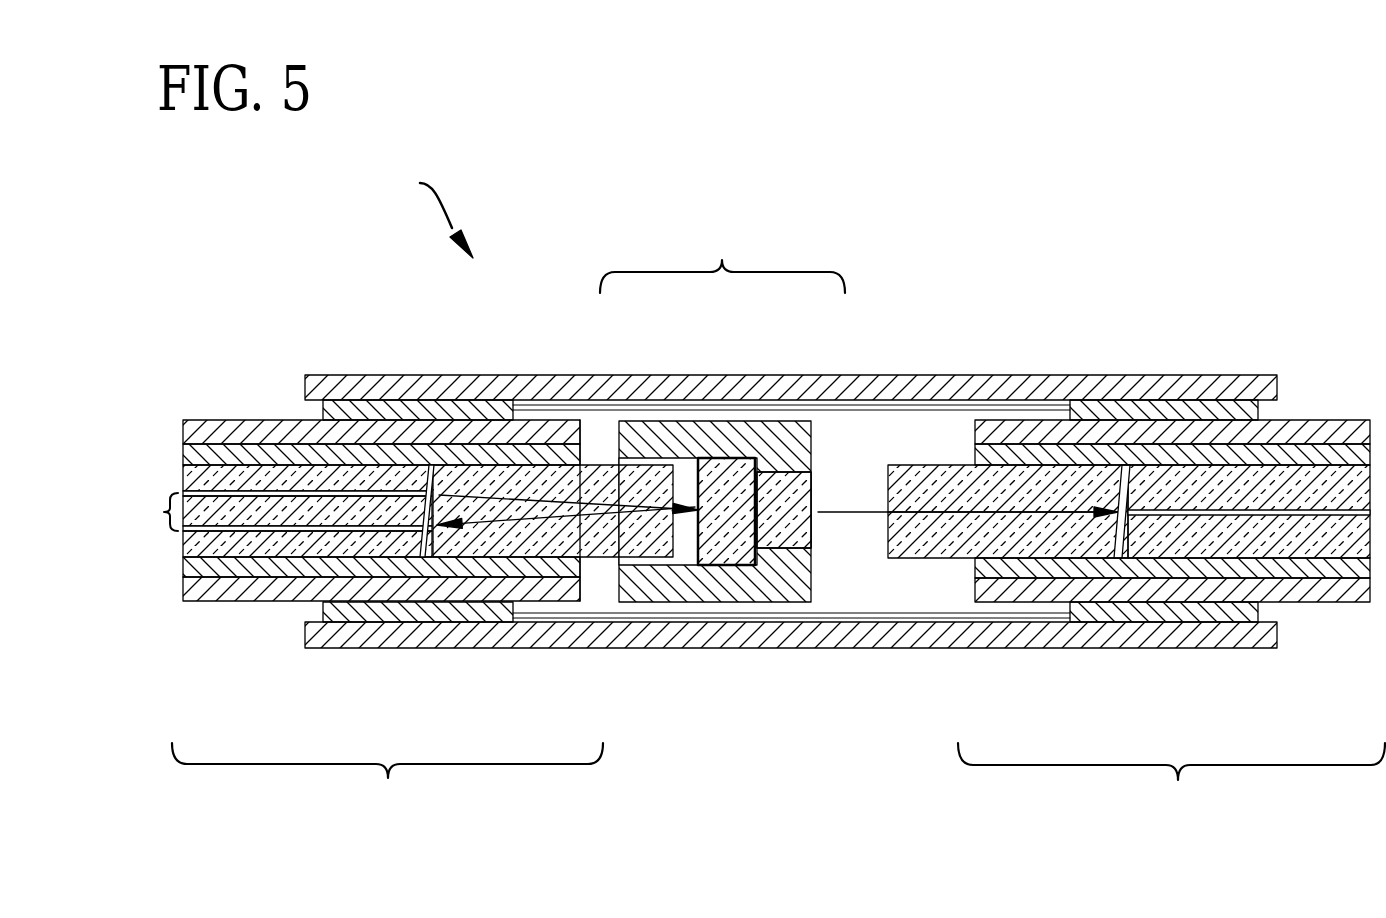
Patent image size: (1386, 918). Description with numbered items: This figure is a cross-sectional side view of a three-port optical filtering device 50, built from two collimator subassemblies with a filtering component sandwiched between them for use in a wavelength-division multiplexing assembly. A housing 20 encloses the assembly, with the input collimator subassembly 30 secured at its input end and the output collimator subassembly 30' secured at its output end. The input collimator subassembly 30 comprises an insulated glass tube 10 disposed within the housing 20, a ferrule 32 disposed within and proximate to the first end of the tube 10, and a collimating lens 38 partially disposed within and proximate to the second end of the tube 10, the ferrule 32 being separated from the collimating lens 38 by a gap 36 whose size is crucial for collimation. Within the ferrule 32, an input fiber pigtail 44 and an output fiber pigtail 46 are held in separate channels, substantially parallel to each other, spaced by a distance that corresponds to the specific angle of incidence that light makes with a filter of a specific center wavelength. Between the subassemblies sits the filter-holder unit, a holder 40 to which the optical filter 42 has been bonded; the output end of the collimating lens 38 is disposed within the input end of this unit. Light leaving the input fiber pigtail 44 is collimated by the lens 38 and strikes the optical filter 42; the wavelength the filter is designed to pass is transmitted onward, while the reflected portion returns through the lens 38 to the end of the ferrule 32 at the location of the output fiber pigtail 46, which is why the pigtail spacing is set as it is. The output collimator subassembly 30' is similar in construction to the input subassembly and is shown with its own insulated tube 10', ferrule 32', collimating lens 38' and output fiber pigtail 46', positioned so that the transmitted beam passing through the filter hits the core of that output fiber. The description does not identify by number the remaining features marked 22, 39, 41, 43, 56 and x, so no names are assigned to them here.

The insulated glass tube 10 is at (381, 448).
The second optical connector 10' is at (1172, 456).
The housing 20 is at (1132, 385).
The splice joint 22 is at (424, 528).
The input collimator subassembly 30 is at (387, 776).
The output collimator subassembly 30' is at (1171, 776).
The ferrule 32 is at (381, 564).
The second ferrule 32' is at (1172, 569).
The gap 36 is at (429, 477).
The collimating lens 38 is at (575, 572).
The second ferrule end portion 38' is at (1008, 585).
The light path in stub 39 is at (473, 493).
The holder 40 is at (680, 435).
The optical axis 41 is at (853, 515).
The optical filter 42 is at (808, 495).
The lens element 43 is at (620, 520).
The input fiber pigtail 44 is at (213, 492).
The output fiber pigtail 46 is at (307, 576).
The second fiber cladding / buffer 46' is at (1248, 455).
The optical filtering device 50 is at (428, 216).
The coupling region 56 is at (722, 263).
The fiber core dimension x is at (163, 512).